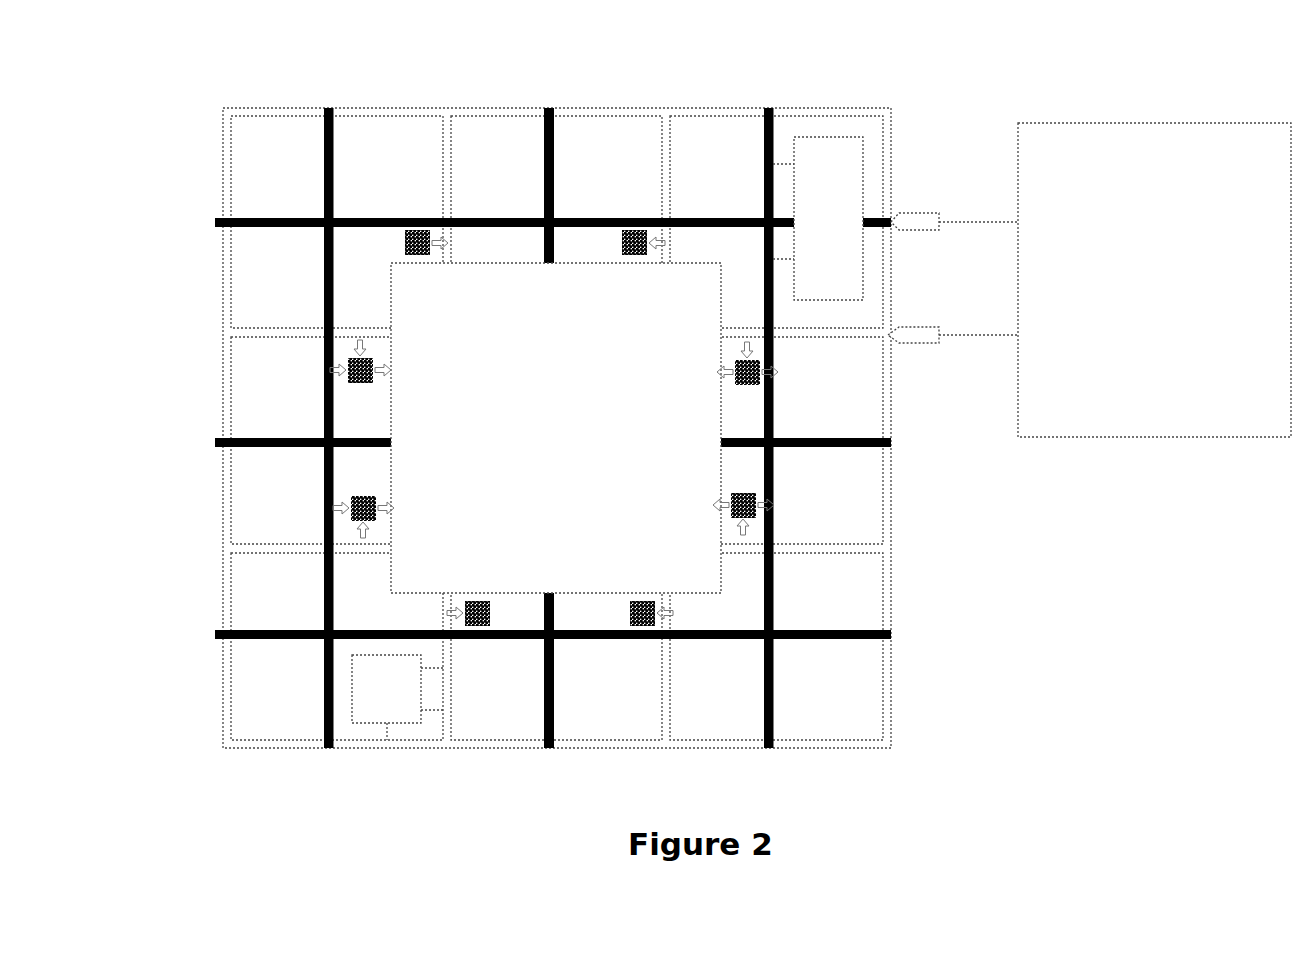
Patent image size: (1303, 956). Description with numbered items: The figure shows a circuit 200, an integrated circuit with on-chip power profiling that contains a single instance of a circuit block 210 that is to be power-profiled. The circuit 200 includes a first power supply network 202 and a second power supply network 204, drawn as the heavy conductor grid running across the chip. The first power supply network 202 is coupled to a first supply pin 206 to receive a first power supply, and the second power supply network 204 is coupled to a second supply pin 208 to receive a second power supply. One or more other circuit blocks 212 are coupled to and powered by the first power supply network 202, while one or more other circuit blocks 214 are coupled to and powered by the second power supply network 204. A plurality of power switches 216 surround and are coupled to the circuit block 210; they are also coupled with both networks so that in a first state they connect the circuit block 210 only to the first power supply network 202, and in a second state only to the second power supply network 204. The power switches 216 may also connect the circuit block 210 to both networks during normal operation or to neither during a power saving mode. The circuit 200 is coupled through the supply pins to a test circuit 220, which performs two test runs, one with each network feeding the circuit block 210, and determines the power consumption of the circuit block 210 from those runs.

The circuit 200 is at (148, 88).
The first power supply network 202 is at (333, 160).
The second power supply network 204 is at (448, 180).
The first supply pin 206 is at (910, 218).
The second supply pin 208 is at (923, 342).
The circuit block 210 is at (556, 428).
The other circuit blocks 212 is at (818, 218).
The other circuit blocks 214 is at (397, 697).
The power switches 216 is at (405, 220).
The test circuit 220 is at (1154, 280).